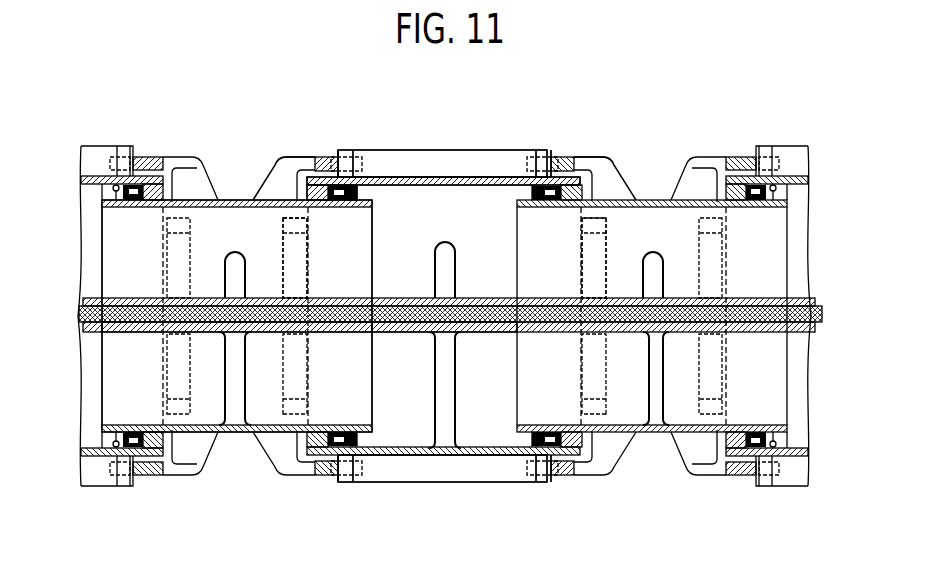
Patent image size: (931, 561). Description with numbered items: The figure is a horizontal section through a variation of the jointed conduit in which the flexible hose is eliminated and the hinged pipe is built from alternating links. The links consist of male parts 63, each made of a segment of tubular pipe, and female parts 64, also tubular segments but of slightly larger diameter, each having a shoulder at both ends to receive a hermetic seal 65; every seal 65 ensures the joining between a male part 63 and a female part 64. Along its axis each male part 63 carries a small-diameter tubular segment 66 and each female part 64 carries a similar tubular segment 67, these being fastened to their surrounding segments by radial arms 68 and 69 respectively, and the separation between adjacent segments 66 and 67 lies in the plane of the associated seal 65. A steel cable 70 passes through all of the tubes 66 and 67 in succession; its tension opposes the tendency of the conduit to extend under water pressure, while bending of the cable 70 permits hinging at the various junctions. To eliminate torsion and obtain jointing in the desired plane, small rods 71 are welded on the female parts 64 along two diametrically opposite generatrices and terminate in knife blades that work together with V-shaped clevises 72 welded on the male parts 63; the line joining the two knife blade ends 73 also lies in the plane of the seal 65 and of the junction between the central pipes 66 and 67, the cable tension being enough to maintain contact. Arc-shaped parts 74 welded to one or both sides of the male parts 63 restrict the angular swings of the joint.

The male part 63 is at (242, 197).
The female part 64 is at (440, 176).
The hermetic seal 65 is at (330, 188).
The tubular segment of small diameter 66 is at (323, 333).
The tubular segment of small diameter 67 is at (410, 333).
The radial arm 68 is at (233, 365).
The radial arm 69 is at (443, 383).
The steel cable 70 is at (387, 302).
The small rod 71 is at (497, 162).
The V-shaped clevis 72 is at (283, 163).
The knife blade end 73 is at (333, 148).
The arc-shaped part 74 is at (282, 247).